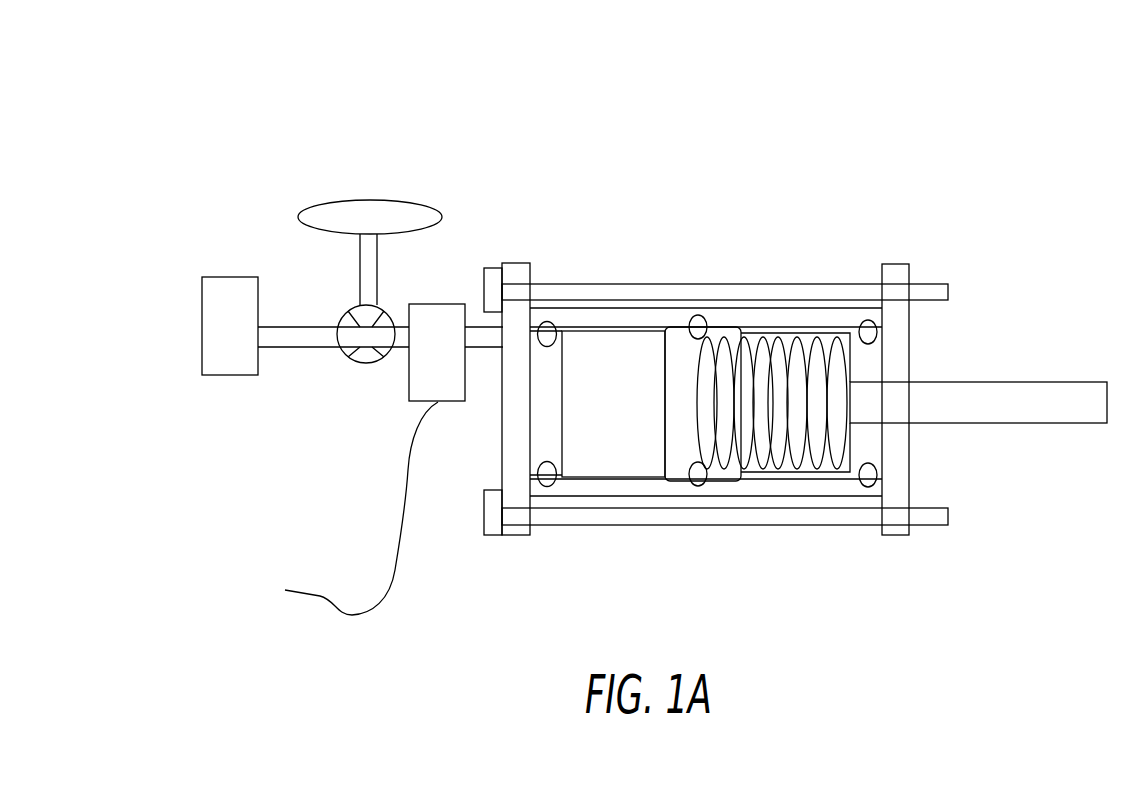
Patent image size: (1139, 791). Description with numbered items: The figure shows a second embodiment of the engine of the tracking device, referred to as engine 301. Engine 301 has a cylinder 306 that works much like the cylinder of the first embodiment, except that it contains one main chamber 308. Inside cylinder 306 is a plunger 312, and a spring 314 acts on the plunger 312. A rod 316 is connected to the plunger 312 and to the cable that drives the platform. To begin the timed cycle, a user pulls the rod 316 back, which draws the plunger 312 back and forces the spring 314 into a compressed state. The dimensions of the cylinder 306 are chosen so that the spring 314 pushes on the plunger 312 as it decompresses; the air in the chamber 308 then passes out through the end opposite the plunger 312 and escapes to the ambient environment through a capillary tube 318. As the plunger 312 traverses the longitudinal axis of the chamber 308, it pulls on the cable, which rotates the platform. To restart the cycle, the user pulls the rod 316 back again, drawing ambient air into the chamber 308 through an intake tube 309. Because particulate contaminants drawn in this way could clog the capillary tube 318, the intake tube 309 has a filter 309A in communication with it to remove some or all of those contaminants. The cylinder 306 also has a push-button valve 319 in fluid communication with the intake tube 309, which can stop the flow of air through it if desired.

The engine 301 is at (215, 90).
The cylinder 306 is at (797, 322).
The chamber 308 is at (614, 377).
The intake tube 309 is at (288, 338).
The filter 309A is at (200, 323).
The plunger 312 is at (688, 412).
The spring 314 is at (719, 340).
The rod 316 is at (948, 398).
The capillary tube 318 is at (397, 523).
The push-button valve 319 is at (383, 312).